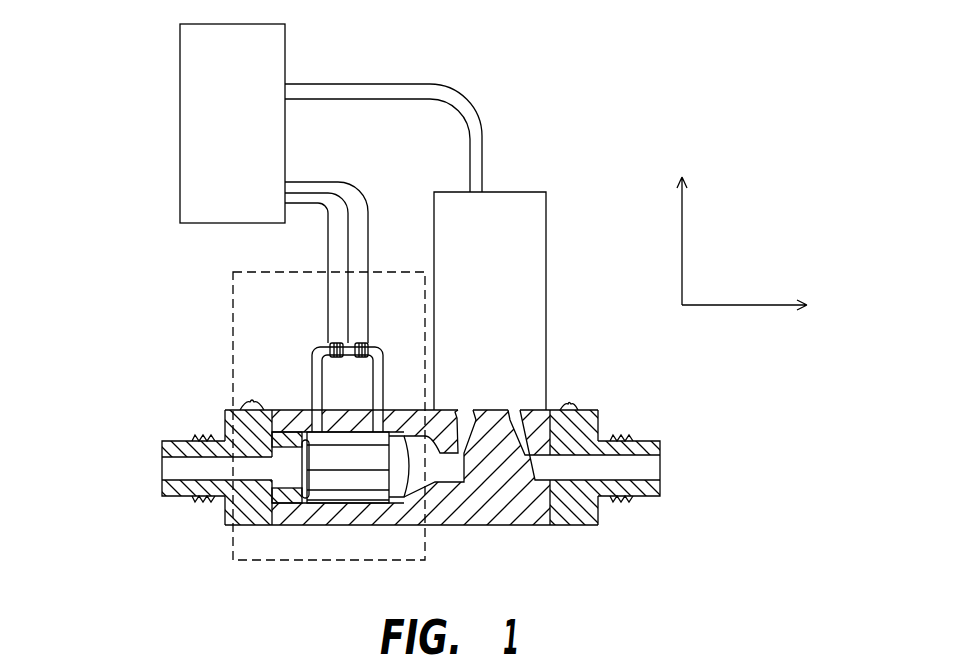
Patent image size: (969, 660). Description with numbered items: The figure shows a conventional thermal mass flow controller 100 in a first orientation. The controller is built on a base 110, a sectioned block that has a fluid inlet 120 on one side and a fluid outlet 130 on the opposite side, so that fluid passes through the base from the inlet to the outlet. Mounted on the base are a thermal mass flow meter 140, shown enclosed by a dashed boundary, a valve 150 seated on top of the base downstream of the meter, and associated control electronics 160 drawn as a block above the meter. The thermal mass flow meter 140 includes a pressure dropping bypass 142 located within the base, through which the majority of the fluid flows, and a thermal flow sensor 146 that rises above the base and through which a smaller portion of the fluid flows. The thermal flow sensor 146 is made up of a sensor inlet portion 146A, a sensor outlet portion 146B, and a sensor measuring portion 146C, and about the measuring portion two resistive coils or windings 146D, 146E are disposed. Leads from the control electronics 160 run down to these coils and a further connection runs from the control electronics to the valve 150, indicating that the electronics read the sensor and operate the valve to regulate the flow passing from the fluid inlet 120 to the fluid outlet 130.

The thermal mass flow controller 100 is at (628, 59).
The base 110 is at (455, 525).
The fluid inlet 120 is at (162, 468).
The fluid outlet 130 is at (660, 468).
The thermal mass flow meter 140 is at (233, 271).
The pressure dropping bypass 142 is at (345, 482).
The thermal flow sensor 146 is at (314, 346).
The sensor inlet portion 146A is at (313, 366).
The sensor outlet portion 146B is at (385, 377).
The sensor measuring portion 146C is at (336, 343).
The resistive coil 146D is at (335, 357).
The resistive coil 146E is at (363, 343).
The valve 150 is at (547, 192).
The control electronics 160 is at (180, 42).